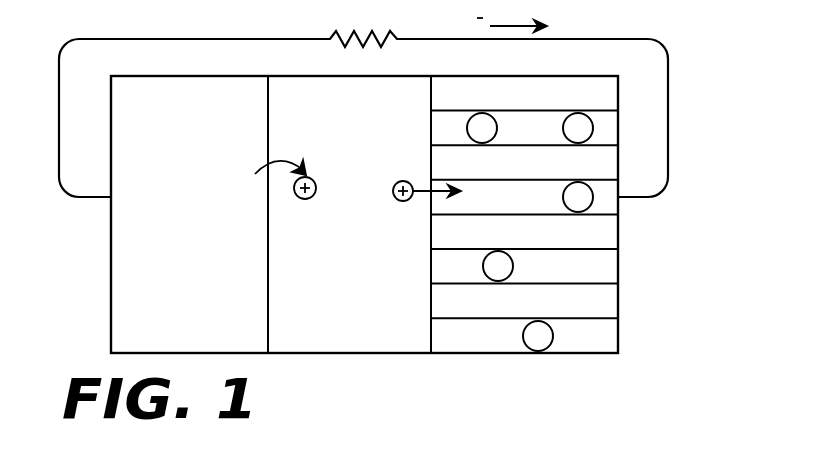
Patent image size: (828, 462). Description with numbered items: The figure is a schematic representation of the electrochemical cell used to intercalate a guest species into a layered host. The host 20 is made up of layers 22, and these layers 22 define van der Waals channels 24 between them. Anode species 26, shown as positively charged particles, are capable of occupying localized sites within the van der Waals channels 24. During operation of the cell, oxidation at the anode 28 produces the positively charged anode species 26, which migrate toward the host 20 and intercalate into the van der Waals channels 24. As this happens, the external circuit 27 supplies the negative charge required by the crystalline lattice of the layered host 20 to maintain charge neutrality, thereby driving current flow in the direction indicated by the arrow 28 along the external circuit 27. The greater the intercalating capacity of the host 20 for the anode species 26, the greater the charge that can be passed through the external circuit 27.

The host 20 is at (475, 358).
The layers 22 is at (539, 104).
The van der Waals channels 24 is at (602, 132).
The anode species 26 is at (397, 199).
The external circuit 27 is at (668, 78).
The anode 28 is at (514, 27).